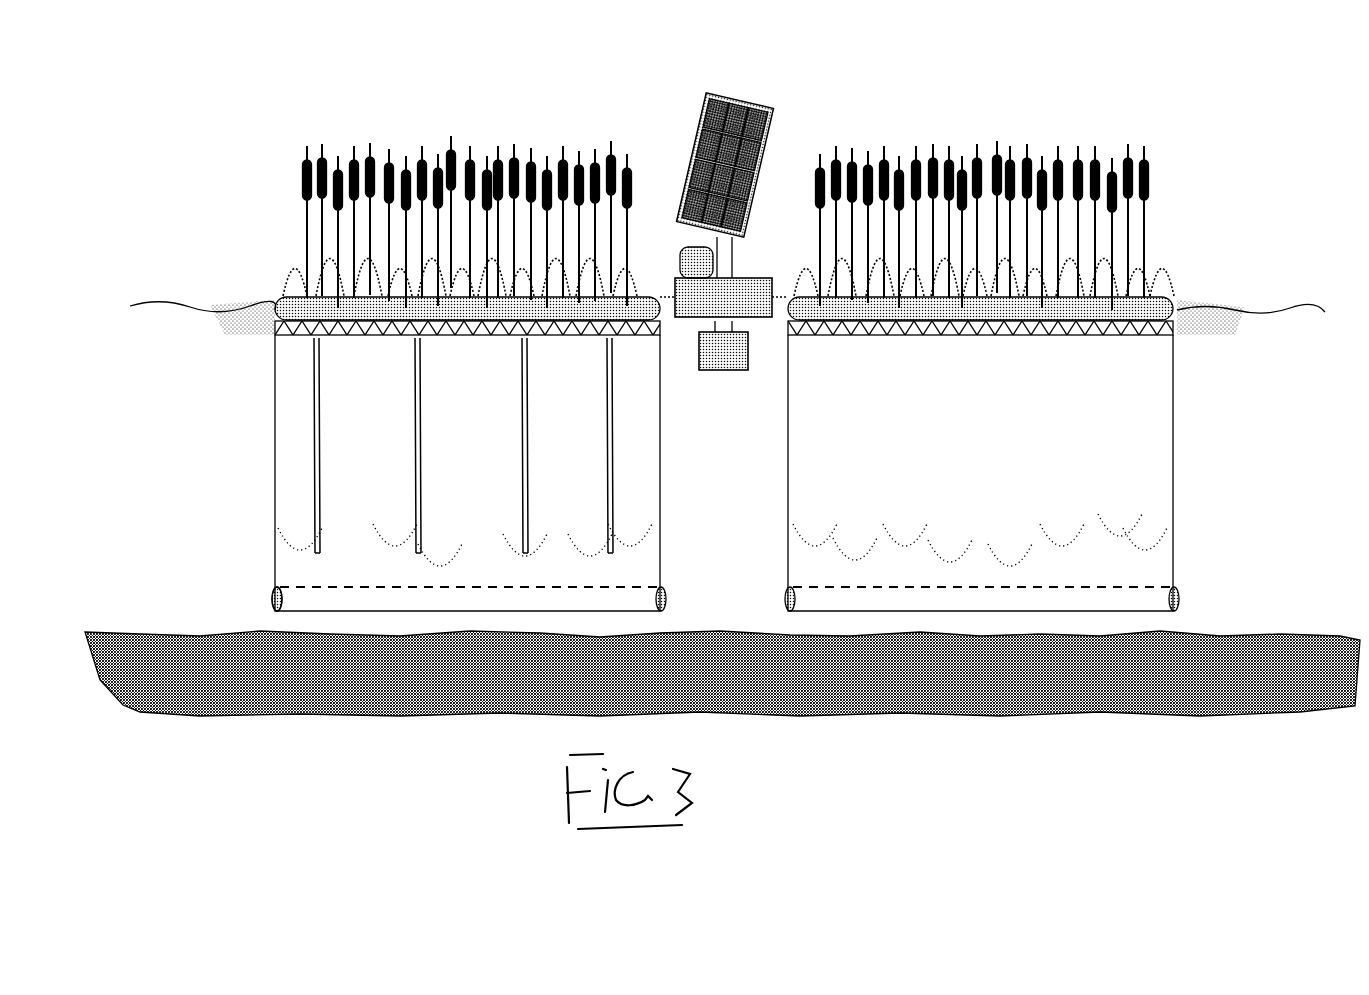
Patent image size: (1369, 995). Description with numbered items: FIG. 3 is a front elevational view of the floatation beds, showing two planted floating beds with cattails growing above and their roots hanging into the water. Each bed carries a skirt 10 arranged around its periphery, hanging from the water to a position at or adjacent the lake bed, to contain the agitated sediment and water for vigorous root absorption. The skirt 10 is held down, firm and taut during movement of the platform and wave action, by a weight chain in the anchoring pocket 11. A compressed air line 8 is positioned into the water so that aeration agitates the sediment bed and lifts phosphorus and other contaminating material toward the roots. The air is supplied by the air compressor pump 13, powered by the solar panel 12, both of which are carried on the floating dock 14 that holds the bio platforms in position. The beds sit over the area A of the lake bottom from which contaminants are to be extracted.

The compressed air line 8 is at (333, 293).
The skirt 10 is at (662, 460).
The anchoring pocket 11 is at (273, 594).
The solar panel 12 is at (718, 93).
The air compressor pump 13 is at (683, 251).
The floating dock 14 is at (761, 278).
The area of the lake bottom A is at (709, 626).